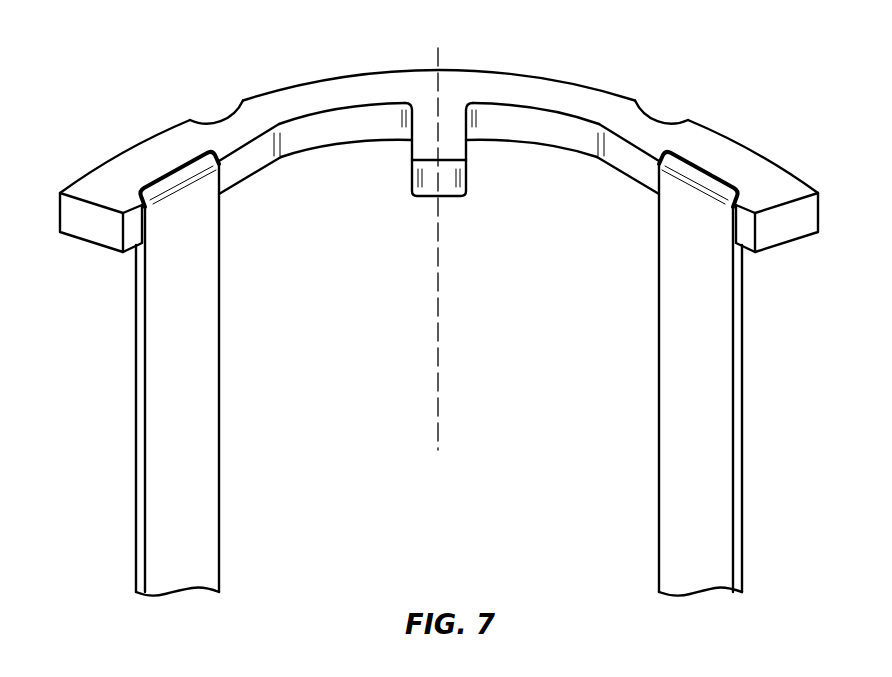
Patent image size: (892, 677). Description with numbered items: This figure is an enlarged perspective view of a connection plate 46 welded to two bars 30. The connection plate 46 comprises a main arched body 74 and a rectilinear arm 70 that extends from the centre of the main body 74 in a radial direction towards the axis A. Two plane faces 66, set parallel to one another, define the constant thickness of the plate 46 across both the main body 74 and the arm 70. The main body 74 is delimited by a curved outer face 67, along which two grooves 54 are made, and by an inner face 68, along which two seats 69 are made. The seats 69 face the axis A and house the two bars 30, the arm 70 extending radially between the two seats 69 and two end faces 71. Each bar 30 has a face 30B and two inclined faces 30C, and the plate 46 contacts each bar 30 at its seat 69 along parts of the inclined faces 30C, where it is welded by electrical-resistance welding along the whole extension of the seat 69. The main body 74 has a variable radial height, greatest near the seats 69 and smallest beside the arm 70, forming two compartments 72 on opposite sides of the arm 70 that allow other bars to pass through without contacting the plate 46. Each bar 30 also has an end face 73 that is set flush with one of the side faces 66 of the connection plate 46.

The connection plate 46 is at (439, 234).
The groove 54 is at (215, 108).
The plane face 66 is at (523, 88).
The curved outer face 67 is at (491, 71).
The inner face 68 is at (270, 166).
The seat 69 is at (186, 177).
The rectilinear arm 70 is at (448, 148).
The end face 71 is at (101, 226).
The compartment 72 is at (360, 144).
The end face 73 is at (452, 142).
The main arched body 74 is at (405, 86).
The bar 30 is at (439, 380).
The face 30B is at (204, 457).
The inclined face 30C is at (140, 354).
The axis A is at (441, 63).